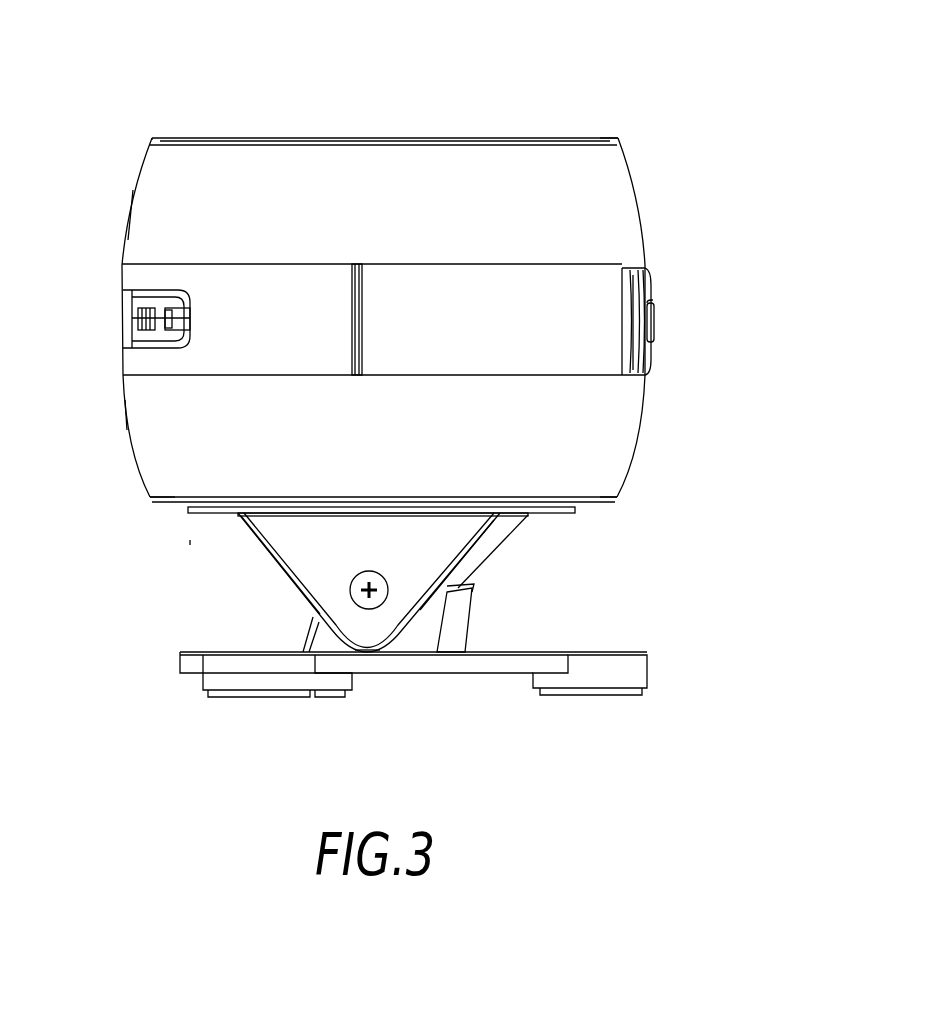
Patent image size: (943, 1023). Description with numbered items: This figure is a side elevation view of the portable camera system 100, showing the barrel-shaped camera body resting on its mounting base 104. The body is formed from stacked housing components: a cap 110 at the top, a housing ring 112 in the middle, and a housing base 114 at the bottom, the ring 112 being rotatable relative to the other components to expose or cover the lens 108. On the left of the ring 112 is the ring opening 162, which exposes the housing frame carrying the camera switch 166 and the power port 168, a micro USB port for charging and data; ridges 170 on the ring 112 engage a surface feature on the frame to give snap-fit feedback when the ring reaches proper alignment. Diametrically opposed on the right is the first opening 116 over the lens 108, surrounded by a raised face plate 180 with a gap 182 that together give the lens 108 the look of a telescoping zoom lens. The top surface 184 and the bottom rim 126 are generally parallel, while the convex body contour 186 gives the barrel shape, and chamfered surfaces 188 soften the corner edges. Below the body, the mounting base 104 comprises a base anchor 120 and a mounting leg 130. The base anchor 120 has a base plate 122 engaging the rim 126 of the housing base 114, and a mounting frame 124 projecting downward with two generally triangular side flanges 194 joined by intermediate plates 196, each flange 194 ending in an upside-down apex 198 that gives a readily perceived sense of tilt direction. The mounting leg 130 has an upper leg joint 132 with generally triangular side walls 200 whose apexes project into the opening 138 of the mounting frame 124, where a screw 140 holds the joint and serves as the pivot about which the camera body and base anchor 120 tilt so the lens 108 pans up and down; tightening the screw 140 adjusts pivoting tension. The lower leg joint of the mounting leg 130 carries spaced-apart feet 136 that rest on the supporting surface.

The camera system 100 is at (102, 140).
The mounting base 104 is at (630, 598).
The camera lens 108 is at (654, 322).
The cap 110 is at (203, 138).
The housing ring 112 is at (420, 303).
The housing base 114 is at (155, 428).
The first opening 116 is at (653, 305).
The base anchor 120 is at (300, 548).
The base plate 122 is at (205, 513).
The mounting frame 124 is at (420, 543).
The bottom rim 126 is at (165, 500).
The mounting leg 130 is at (272, 700).
The upper leg joint 132 is at (447, 628).
The feet 136 is at (630, 672).
The opening 138 is at (462, 590).
The screw 140 is at (373, 580).
The ring opening 162 is at (122, 290).
The camera switch 166 is at (137, 320).
The power port 168 is at (175, 318).
The ridges 170 is at (352, 298).
The raised face plate 180 is at (651, 278).
The gap 182 is at (634, 272).
The top surface 184 is at (323, 138).
The body contour 186 is at (174, 235).
The chamfered surfaces 188 is at (618, 138).
The side flanges 194 is at (255, 540).
The intermediate plates 196 is at (497, 542).
The apex 198 is at (367, 655).
The side walls 200 is at (318, 630).